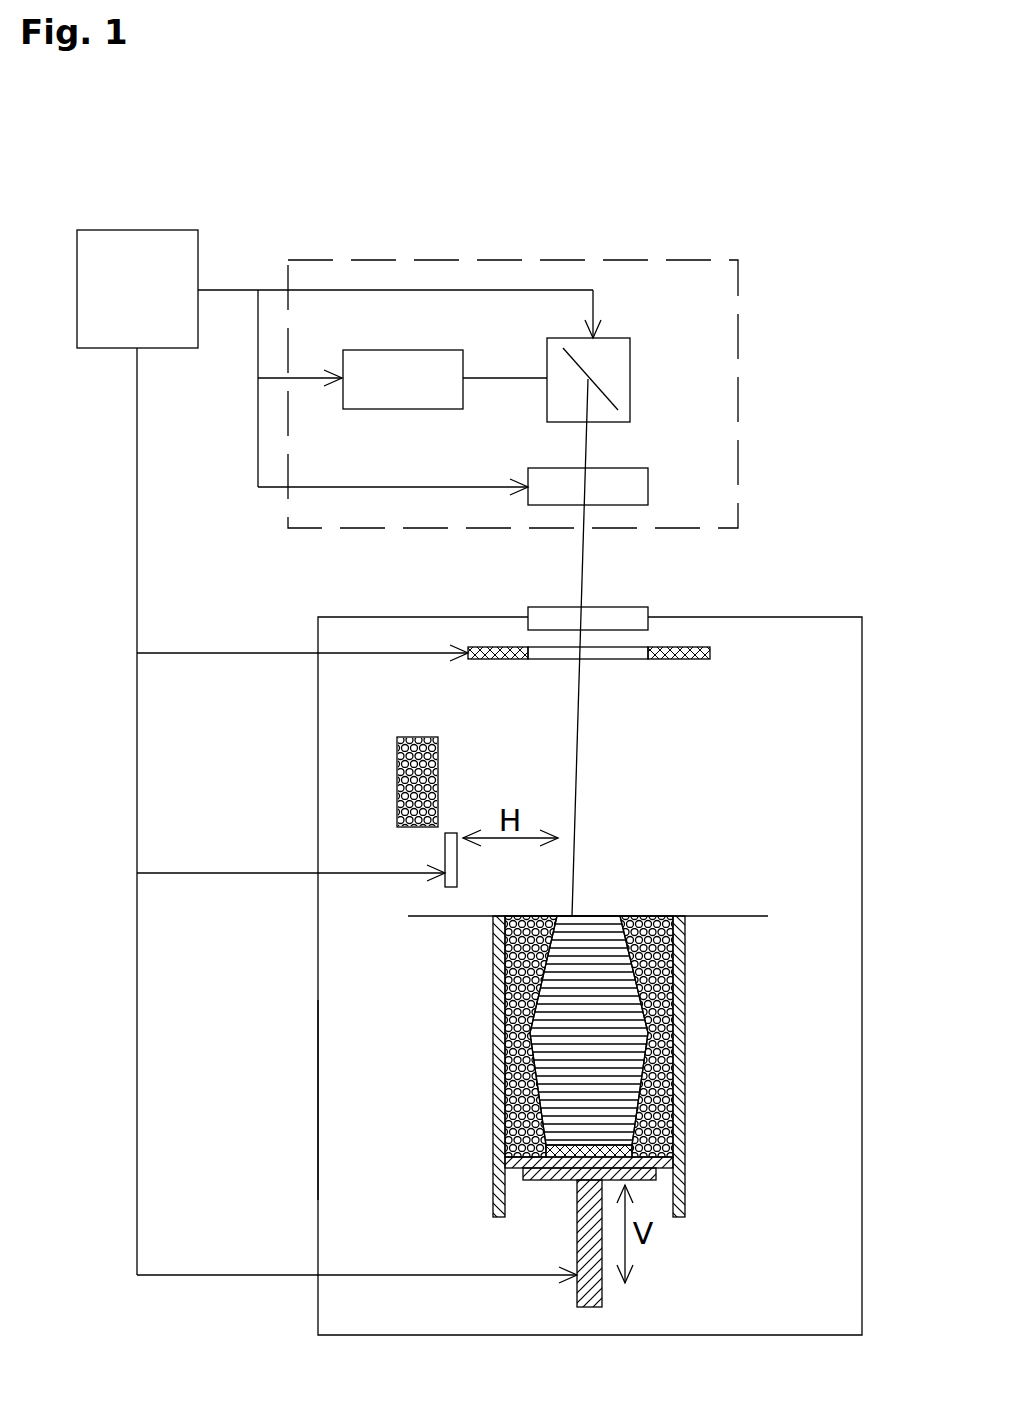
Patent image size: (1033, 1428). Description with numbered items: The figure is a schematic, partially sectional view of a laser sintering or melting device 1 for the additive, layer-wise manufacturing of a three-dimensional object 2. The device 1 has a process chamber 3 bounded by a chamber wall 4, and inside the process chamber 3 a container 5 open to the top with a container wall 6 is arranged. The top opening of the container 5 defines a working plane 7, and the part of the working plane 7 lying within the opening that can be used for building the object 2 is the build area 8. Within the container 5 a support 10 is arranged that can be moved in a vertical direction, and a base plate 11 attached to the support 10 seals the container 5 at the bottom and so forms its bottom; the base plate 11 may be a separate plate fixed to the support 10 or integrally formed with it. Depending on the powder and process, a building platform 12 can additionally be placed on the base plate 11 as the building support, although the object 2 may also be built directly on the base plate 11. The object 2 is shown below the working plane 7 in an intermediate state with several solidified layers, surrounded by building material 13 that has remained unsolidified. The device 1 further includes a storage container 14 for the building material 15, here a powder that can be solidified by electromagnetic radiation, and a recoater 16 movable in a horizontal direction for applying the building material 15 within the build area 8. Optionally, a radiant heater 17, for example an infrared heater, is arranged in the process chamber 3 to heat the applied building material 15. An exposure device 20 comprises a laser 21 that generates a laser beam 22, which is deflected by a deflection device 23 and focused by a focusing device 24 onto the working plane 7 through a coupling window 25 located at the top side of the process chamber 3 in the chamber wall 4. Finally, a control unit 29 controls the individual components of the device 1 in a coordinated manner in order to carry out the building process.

The laser sintering or melting device 1 is at (473, 730).
The object 2 is at (607, 977).
The process chamber 3 is at (774, 651).
The chamber wall 4 is at (318, 1120).
The container 5 is at (580, 1029).
The container wall 6 is at (680, 1065).
The working plane 7 is at (738, 916).
The build area 8 is at (647, 916).
The support 10 is at (567, 1177).
The base plate 11 is at (533, 1163).
The building platform 12 is at (533, 1153).
The building material 13 is at (497, 960).
The storage container 14 is at (415, 737).
The building material 15 is at (438, 780).
The recoater 16 is at (445, 850).
The radiant heater 17 is at (500, 648).
The exposure device 20 is at (738, 378).
The laser 21 is at (402, 409).
The laser beam 22 is at (485, 378).
The deflection device 23 is at (618, 348).
The focusing device 24 is at (618, 480).
The coupling window 25 is at (623, 618).
The control unit 29 is at (137, 289).